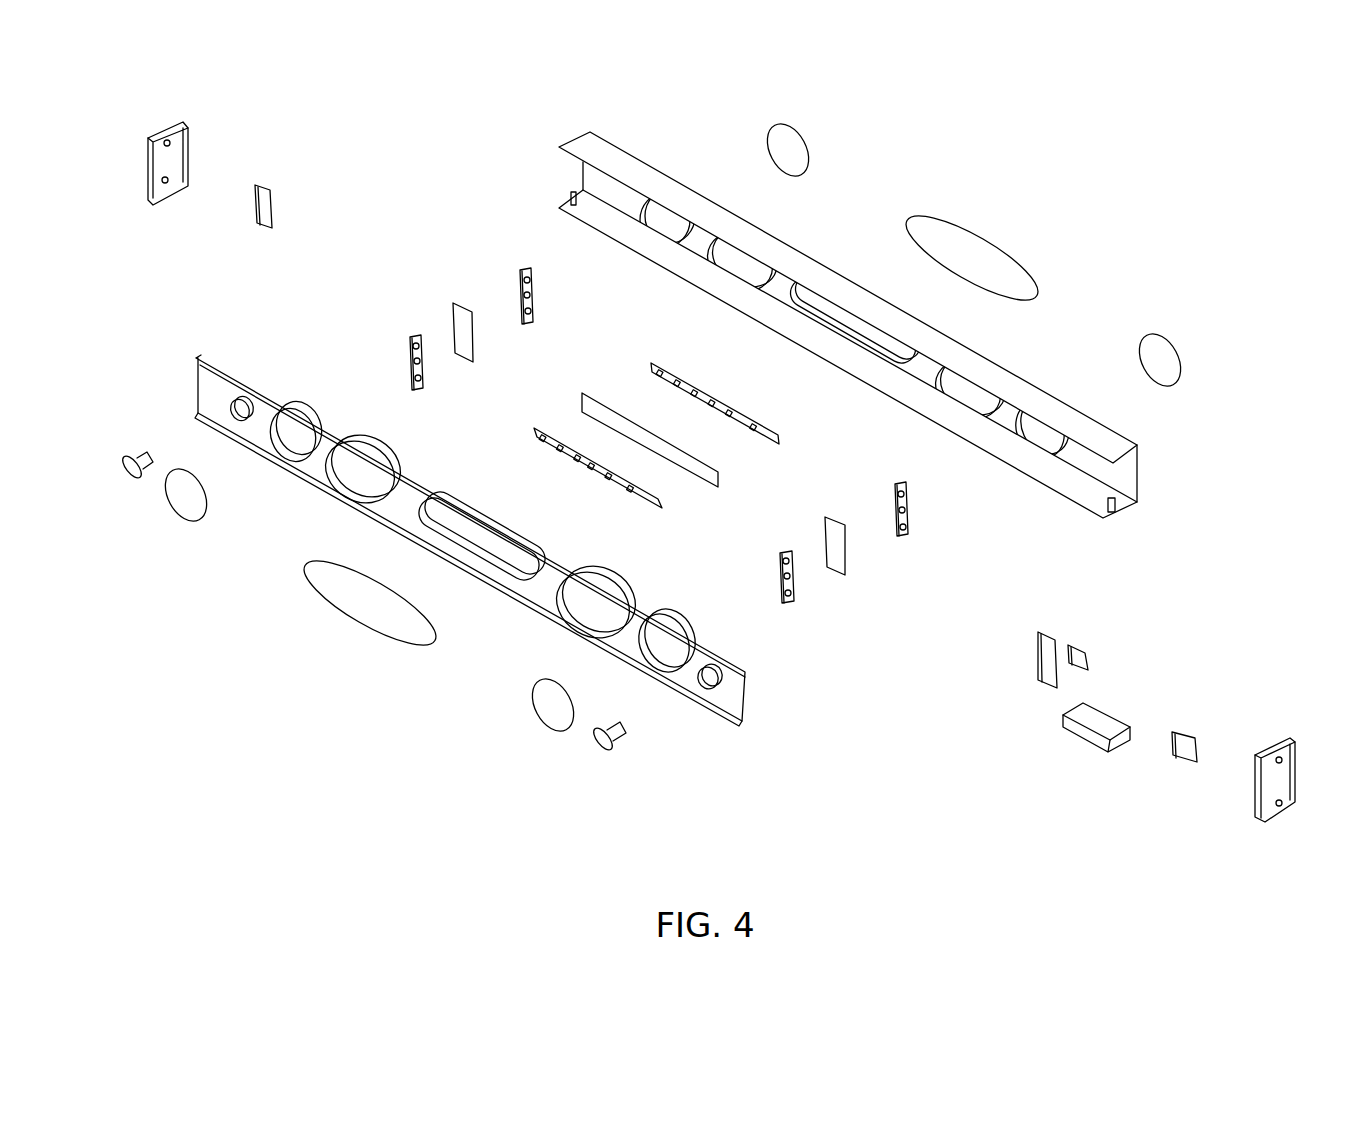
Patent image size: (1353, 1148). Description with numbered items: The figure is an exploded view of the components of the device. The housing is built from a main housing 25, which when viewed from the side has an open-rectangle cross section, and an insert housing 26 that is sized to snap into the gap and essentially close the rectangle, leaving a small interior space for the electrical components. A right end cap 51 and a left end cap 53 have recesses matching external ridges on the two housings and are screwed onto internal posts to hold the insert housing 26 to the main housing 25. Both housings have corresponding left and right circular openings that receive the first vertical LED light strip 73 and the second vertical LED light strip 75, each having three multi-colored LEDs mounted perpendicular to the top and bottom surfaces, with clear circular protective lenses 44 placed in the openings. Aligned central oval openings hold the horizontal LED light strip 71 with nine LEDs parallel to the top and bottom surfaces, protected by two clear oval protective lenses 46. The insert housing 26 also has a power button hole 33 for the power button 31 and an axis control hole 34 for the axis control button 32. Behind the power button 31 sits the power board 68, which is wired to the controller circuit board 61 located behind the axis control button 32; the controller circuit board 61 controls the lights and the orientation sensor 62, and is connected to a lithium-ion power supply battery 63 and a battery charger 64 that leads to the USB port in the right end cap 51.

The main housing 25 is at (586, 146).
The insert housing 26 is at (420, 478).
The power button 31 is at (129, 452).
The axis control button 32 is at (598, 748).
The power button hole 33 is at (241, 400).
The axis control hole 34 is at (709, 690).
The circular protective lens 44 is at (792, 138).
The oval protective lens 46 is at (966, 250).
The right end cap 51 is at (1270, 748).
The left end cap 53 is at (166, 128).
The controller circuit board 61 is at (1047, 630).
The orientation sensor 62 is at (1080, 643).
The power supply battery 63 is at (1119, 706).
The battery charger 64 is at (1182, 730).
The power board 68 is at (263, 184).
The horizontal LED light strip 71 is at (652, 362).
The first vertical LED light strip 73 is at (528, 268).
The second vertical LED light strip 75 is at (786, 550).